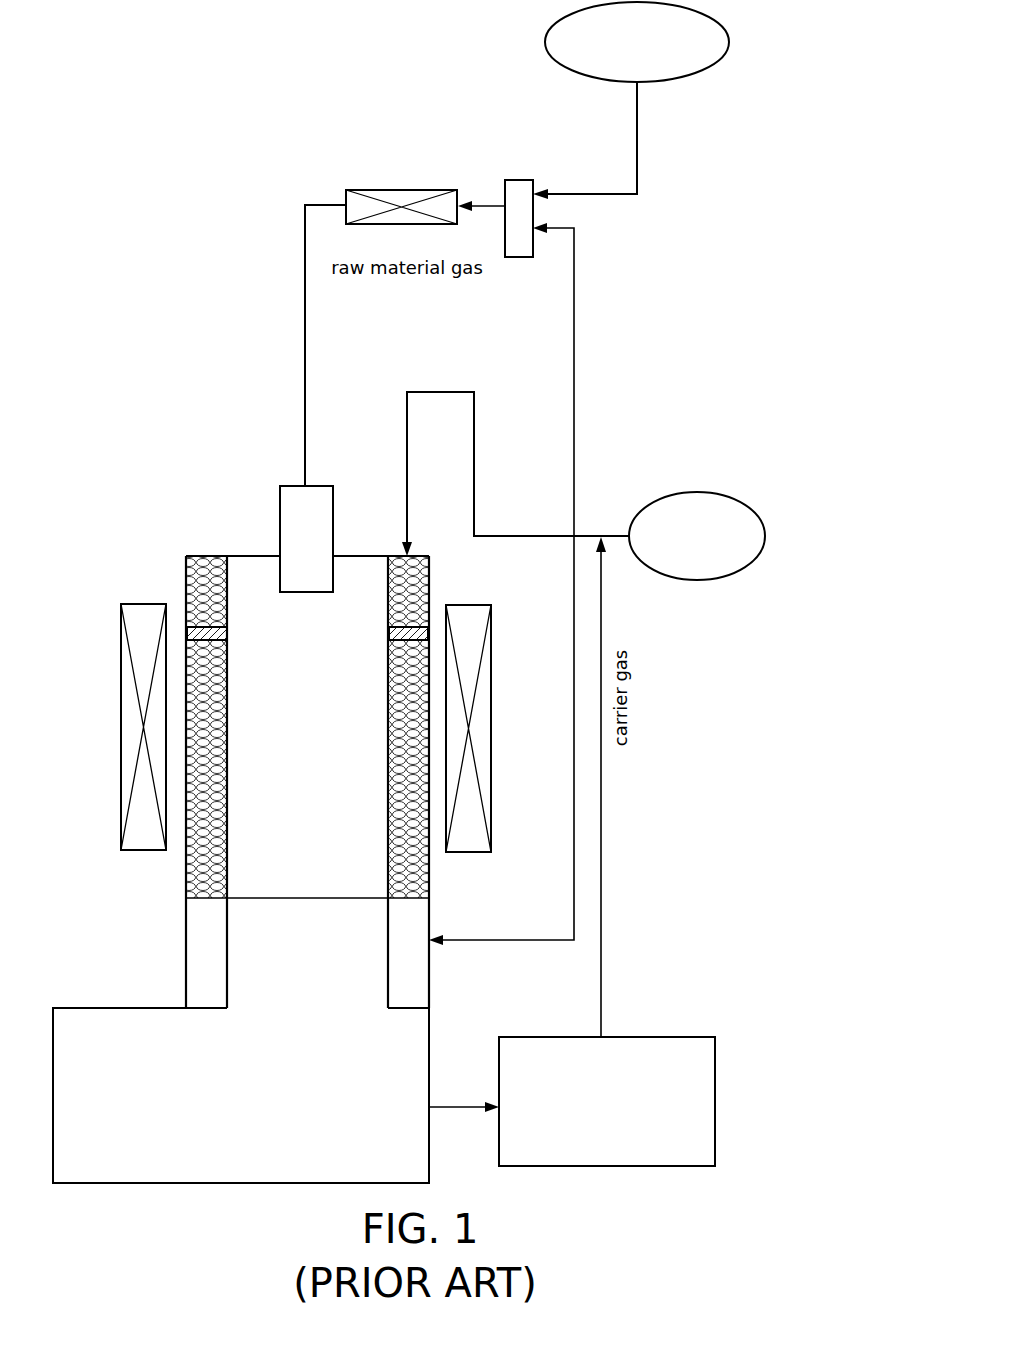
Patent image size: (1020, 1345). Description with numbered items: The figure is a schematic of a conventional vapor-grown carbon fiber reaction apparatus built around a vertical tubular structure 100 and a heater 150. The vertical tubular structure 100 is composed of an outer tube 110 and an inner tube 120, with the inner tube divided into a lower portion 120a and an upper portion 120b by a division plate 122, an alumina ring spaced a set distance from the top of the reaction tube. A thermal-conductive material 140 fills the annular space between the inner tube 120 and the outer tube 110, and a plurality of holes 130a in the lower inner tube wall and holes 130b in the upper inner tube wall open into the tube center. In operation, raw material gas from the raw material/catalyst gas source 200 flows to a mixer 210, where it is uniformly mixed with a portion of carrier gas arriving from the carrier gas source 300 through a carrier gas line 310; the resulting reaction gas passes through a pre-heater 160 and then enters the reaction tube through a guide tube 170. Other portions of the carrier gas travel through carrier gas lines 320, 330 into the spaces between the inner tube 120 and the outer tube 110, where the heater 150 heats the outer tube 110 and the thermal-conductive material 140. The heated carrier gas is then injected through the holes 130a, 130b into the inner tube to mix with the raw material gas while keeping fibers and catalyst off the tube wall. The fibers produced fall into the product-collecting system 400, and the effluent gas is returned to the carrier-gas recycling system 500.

The vertical tubular structure 100 is at (278, 709).
The outer tube 110 is at (430, 606).
The inner tube 120 is at (355, 678).
The lower portion of the inner tube 120a is at (388, 626).
The upper portion of the inner tube 120b is at (388, 680).
The division plate 122 is at (228, 634).
The holes 130a is at (230, 584).
The holes 130b is at (230, 740).
The thermal-conductive material 140 is at (213, 562).
The heater 150 is at (125, 712).
The pre-heater 160 is at (405, 193).
The guide tube 170 is at (292, 495).
The raw material/catalyst gas source 200 is at (729, 42).
The mixer 210 is at (527, 181).
The carrier gas source 300 is at (766, 536).
The carrier gas line 310 is at (574, 486).
The carrier gas line 320 is at (505, 538).
The carrier gas line 330 is at (574, 785).
The product-collecting system 400 is at (250, 1099).
The carrier-gas recycling system 500 is at (590, 1144).